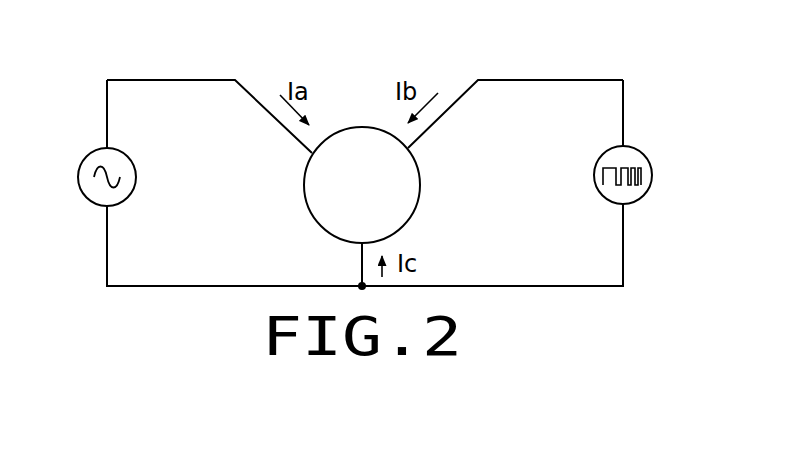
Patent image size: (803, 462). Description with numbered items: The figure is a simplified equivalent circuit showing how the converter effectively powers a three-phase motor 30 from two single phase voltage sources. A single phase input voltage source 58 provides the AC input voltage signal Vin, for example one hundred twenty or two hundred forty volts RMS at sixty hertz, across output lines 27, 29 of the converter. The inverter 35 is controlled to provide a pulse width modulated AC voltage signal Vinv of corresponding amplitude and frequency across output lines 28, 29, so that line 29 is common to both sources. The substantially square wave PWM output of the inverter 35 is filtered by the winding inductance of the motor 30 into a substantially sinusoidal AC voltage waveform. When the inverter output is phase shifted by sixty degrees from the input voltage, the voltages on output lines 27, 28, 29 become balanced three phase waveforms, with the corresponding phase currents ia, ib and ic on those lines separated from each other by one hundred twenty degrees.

The single phase input voltage source 58 is at (94, 150).
The output line 27 is at (253, 99).
The output line 28 is at (436, 122).
The output line 29 is at (362, 262).
The motor 30 is at (306, 216).
The inverter 35 is at (644, 197).